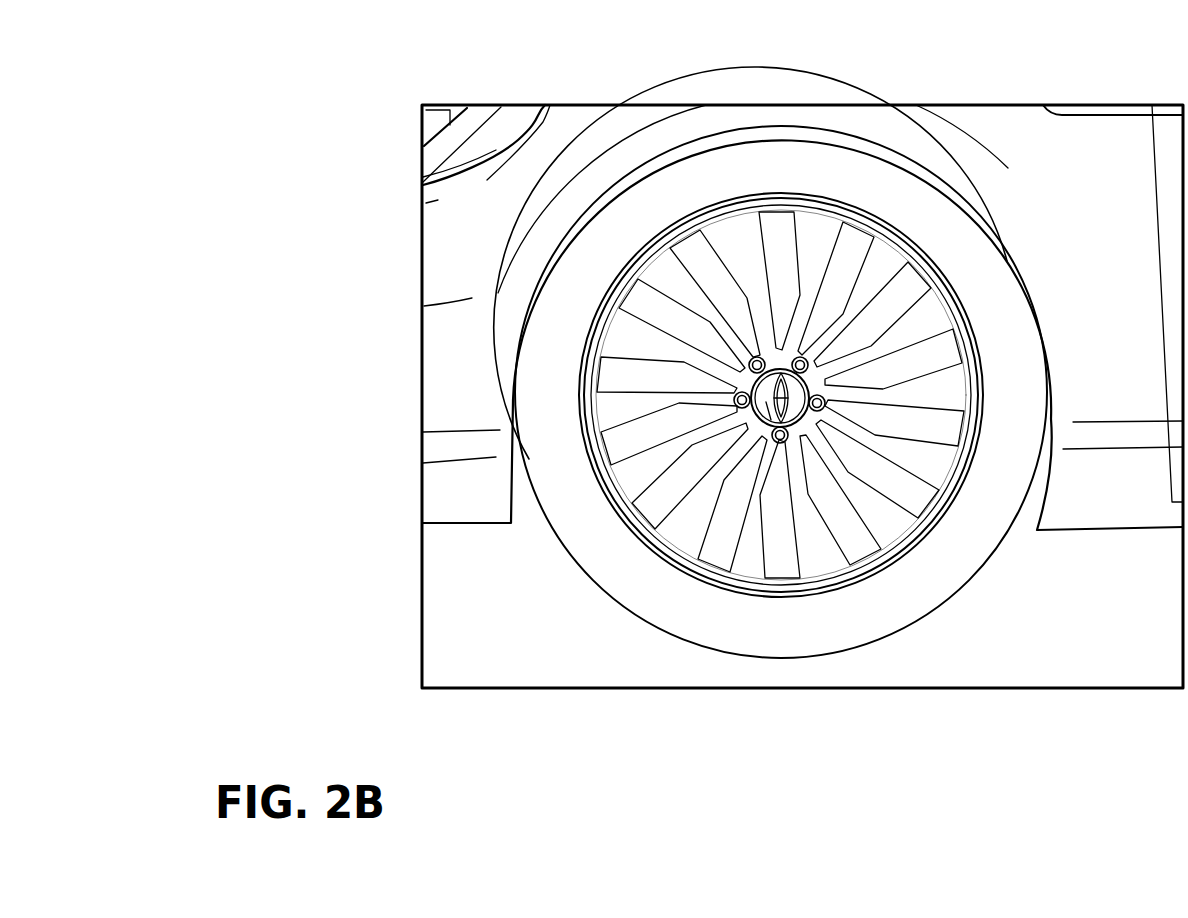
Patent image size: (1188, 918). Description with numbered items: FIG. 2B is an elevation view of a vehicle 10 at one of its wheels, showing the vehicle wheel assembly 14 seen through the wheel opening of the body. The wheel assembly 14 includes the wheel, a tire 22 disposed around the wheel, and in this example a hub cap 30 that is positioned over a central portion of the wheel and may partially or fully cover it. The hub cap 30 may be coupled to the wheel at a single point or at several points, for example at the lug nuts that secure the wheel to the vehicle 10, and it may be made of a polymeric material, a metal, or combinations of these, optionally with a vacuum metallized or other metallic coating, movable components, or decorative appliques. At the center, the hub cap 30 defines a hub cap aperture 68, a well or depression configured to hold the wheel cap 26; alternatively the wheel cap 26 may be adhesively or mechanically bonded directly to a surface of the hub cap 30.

The vehicle 10 is at (1018, 103).
The vehicle wheel assembly 14 is at (983, 582).
The tire 22 is at (1030, 381).
The wheel cap 26 is at (714, 522).
The hub cap 30 is at (828, 543).
The hub cap aperture 68 is at (813, 378).